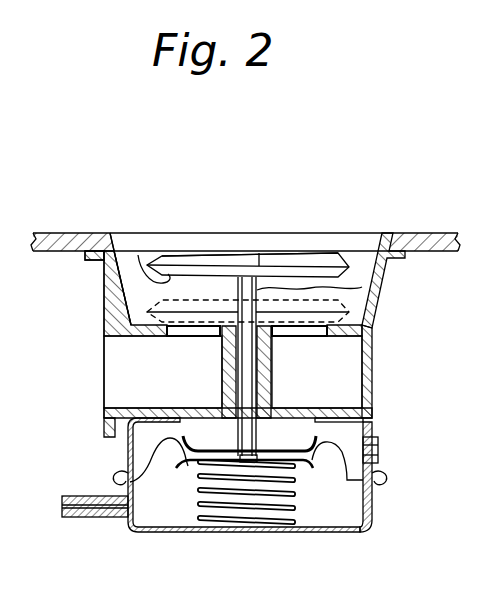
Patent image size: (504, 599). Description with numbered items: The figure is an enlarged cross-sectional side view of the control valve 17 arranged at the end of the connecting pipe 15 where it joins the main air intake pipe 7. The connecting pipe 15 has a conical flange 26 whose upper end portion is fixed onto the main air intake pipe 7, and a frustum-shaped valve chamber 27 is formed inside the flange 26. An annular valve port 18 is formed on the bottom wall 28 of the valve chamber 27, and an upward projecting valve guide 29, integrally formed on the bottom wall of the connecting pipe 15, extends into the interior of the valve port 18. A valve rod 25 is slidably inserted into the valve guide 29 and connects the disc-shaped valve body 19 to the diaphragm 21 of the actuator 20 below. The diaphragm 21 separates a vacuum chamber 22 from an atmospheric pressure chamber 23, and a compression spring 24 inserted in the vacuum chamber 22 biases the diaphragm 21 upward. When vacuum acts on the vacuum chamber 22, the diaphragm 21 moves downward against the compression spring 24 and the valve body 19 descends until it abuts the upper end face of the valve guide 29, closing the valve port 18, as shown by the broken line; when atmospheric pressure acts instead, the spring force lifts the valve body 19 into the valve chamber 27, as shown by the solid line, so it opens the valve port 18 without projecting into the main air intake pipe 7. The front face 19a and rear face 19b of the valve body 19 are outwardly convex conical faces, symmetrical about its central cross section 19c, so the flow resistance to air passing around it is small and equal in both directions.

The main air intake pipe 7 is at (452, 253).
The connecting pipe 15 is at (373, 345).
The control valve 17 is at (245, 494).
The valve port 18 is at (195, 336).
The valve body 19 is at (312, 262).
The front face 19a is at (182, 252).
The rear face 19b is at (138, 255).
The central cross section 19c is at (259, 258).
The actuator 20 is at (127, 455).
The diaphragm 21 is at (345, 485).
The vacuum chamber 22 is at (162, 516).
The atmospheric pressure chamber 23 is at (348, 434).
The compression spring 24 is at (265, 508).
The valve rod 25 is at (375, 297).
The flange 26 is at (110, 308).
The valve chamber 27 is at (128, 278).
The bottom wall 28 is at (143, 337).
The valve guide 29 is at (274, 382).